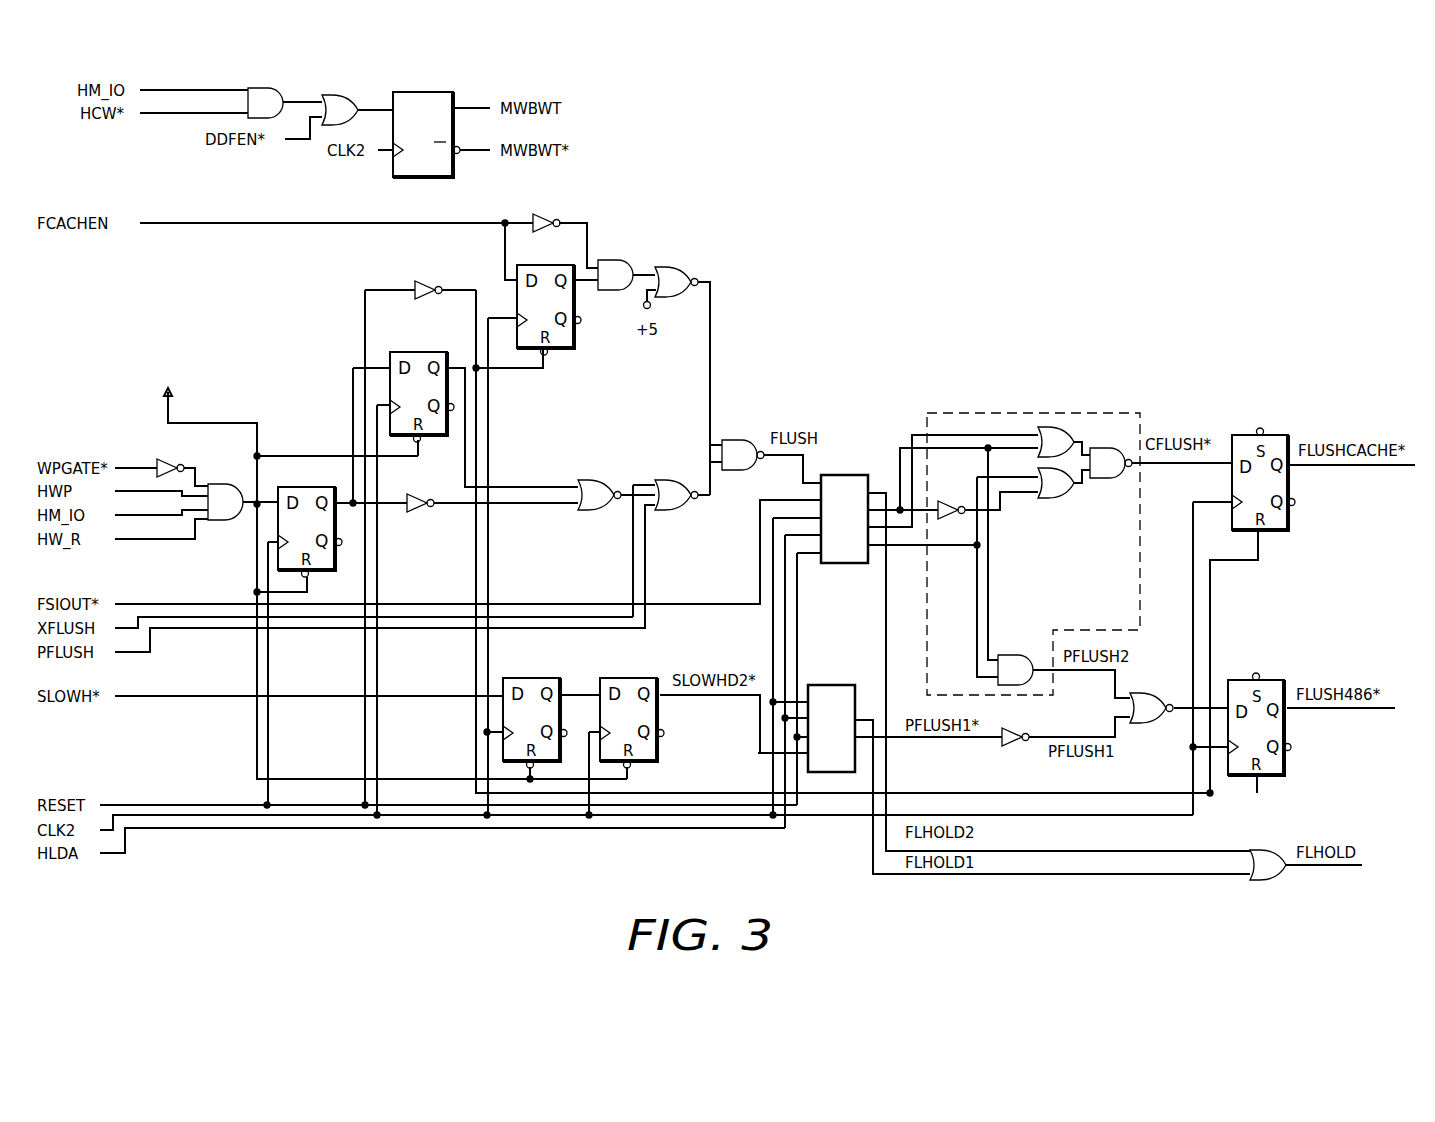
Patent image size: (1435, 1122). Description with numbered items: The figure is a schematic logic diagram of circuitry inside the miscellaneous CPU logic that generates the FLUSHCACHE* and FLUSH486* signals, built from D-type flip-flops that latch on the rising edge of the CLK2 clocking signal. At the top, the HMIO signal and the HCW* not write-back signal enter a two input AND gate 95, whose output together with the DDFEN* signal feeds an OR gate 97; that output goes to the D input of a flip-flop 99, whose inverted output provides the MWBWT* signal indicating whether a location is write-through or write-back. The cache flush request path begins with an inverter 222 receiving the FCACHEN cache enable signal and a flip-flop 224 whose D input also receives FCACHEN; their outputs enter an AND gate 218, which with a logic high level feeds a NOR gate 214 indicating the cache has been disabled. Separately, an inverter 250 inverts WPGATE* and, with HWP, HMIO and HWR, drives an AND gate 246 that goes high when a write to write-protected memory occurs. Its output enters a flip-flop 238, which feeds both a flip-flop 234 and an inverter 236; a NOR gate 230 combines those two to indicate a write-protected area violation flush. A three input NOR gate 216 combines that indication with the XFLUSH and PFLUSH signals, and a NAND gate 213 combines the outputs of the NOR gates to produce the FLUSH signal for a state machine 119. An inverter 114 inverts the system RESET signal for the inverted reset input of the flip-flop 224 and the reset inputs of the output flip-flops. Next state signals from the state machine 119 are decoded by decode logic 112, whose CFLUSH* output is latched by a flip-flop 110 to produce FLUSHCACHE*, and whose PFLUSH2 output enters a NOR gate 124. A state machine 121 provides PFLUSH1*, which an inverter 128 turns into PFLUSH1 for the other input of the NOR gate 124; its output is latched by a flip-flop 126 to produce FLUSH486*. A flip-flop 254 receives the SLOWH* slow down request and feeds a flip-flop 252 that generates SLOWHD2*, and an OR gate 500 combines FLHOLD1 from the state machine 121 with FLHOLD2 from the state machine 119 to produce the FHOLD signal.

The AND gate 95 is at (270, 88).
The OR gate 97 is at (336, 97).
The D-type flip-flop 99 is at (440, 92).
The inverter 222 is at (548, 214).
The AND gate 218 is at (620, 260).
The NOR gate 214 is at (680, 270).
The inverter 114 is at (425, 283).
The D-type flip-flop 224 is at (560, 347).
The D-type flip-flop 234 is at (405, 352).
The inverter 250 is at (172, 458).
The AND gate 246 is at (222, 520).
The D-type flip-flop 238 is at (325, 570).
The inverter 236 is at (433, 510).
The NOR gate 230 is at (600, 480).
The NOR gate 216 is at (662, 482).
The NAND gate 213 is at (740, 440).
The state machine 119 is at (845, 563).
The state machine 121 is at (838, 683).
The decode logic 112 is at (1015, 413).
The flip-flop 110 is at (1275, 435).
The flip-flop 126 is at (1272, 680).
The NOR gate 124 is at (1152, 723).
The inverter 128 is at (1010, 757).
The OR gate 500 is at (1265, 850).
The D-type flip-flop 254 is at (525, 678).
The D-type flip-flop 252 is at (620, 678).